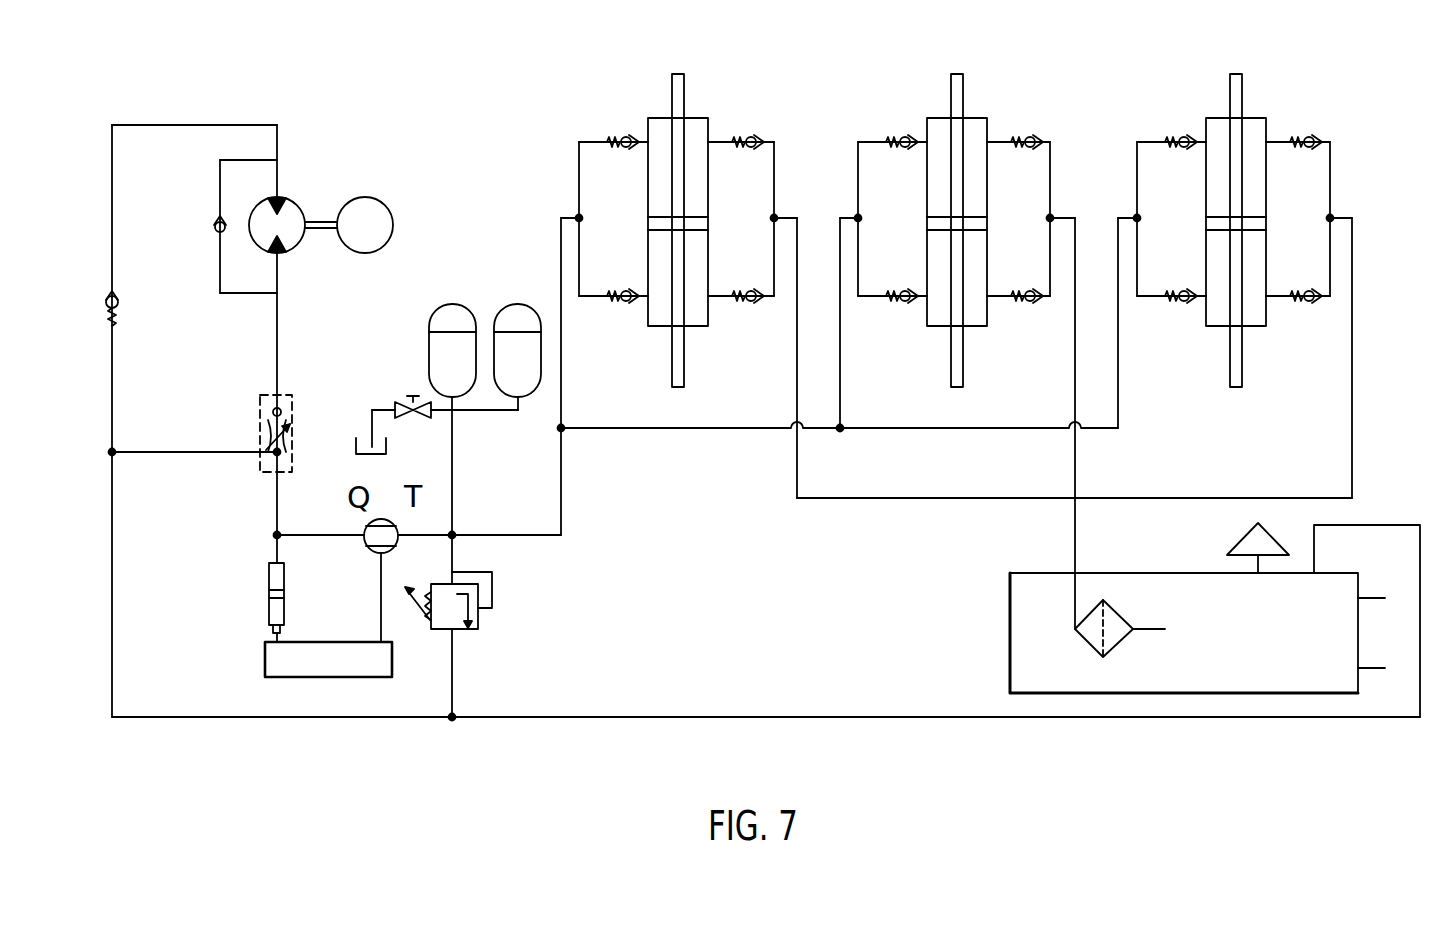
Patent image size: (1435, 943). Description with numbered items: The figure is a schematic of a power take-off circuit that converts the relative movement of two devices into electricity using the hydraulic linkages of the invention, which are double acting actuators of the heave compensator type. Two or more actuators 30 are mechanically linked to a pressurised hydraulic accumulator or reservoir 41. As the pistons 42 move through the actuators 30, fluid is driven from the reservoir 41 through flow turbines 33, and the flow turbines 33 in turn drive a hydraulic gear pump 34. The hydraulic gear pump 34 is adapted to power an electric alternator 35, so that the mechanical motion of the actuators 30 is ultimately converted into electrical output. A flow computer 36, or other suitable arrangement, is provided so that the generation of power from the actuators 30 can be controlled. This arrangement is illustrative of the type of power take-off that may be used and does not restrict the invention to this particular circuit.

The actuators 30 is at (702, 118).
The pistons 42 is at (682, 97).
The flow turbines 33 is at (366, 526).
The hydraulic gear pump 34 is at (288, 207).
The electric alternator 35 is at (382, 236).
The flow computer 36 is at (254, 657).
The pressurised hydraulic accumulator or reservoir 41 is at (1010, 603).